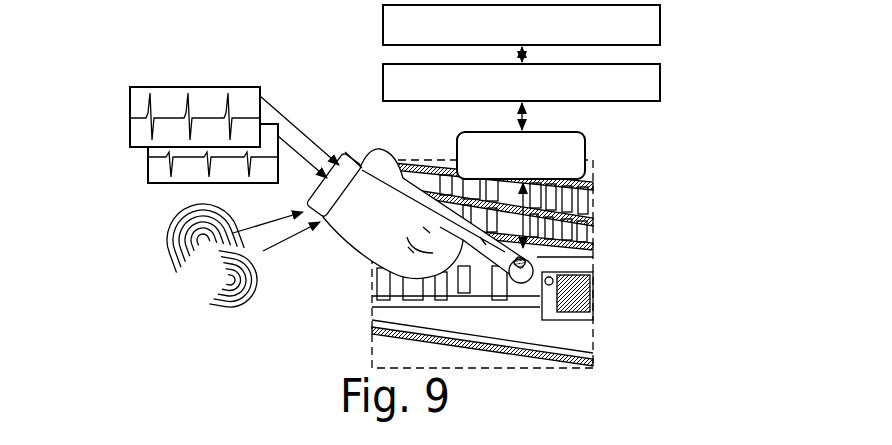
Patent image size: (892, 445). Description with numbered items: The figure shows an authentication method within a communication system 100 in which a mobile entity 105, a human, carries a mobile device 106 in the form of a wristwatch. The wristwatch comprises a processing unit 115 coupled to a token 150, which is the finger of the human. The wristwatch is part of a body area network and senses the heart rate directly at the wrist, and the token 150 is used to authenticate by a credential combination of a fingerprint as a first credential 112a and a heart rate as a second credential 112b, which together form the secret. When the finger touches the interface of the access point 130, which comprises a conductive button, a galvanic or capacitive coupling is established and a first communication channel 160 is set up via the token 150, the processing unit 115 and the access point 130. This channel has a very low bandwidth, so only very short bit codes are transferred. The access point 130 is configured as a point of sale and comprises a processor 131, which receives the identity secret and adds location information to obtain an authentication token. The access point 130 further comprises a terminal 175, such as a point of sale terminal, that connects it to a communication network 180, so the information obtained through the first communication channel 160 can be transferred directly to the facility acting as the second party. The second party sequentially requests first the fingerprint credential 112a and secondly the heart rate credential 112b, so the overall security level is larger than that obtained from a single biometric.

The communication system 100 is at (565, 234).
The mobile entity 105 is at (320, 242).
The mobile device 106 is at (360, 153).
The first credential 112a is at (179, 285).
The second credential 112b is at (127, 85).
The processing unit 115 is at (346, 163).
The access point 130 is at (591, 278).
The processor 131 is at (585, 152).
The token 150 is at (400, 237).
The first communication channel 160 is at (405, 180).
The terminal 175 is at (660, 86).
The communication network 180 is at (660, 31).